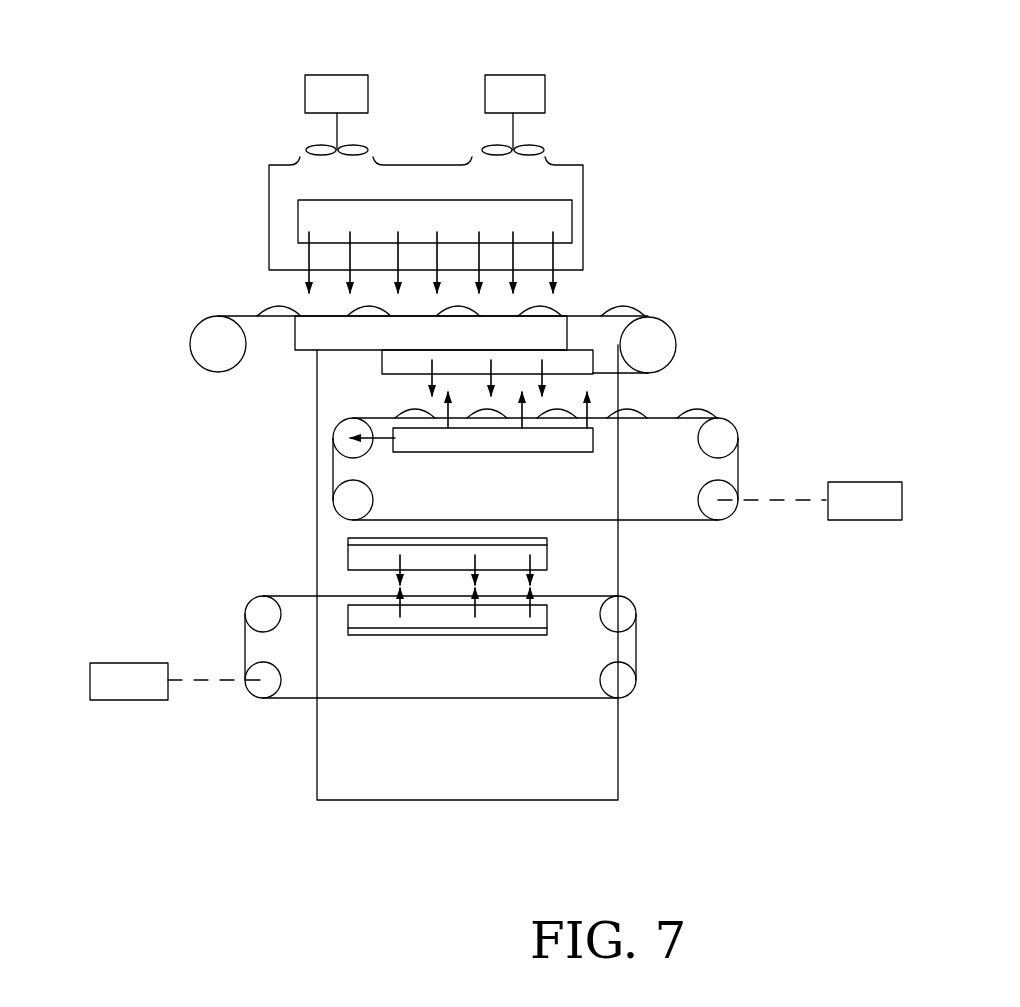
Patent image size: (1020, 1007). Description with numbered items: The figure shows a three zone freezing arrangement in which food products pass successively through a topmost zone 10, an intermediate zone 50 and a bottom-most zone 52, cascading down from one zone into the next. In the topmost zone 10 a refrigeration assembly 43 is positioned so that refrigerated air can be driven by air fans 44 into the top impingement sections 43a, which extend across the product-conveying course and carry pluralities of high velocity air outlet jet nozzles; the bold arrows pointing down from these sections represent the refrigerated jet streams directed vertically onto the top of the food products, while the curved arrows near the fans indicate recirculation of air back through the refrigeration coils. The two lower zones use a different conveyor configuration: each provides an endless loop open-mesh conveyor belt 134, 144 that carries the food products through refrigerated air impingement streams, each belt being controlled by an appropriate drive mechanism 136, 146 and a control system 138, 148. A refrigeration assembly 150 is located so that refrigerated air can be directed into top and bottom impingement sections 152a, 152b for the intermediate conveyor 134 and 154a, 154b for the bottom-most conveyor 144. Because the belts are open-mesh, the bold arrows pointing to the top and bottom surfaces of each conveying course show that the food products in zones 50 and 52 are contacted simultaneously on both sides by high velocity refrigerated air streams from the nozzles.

The first zone 10 is at (145, 343).
The refrigeration assembly 43 is at (461, 196).
The top impingement sections 43a is at (540, 240).
The air fans 44 is at (349, 73).
The intermediate zone 50 is at (357, 400).
The bottom-most zone 52 is at (165, 605).
The open-mesh conveyor belt 134 is at (738, 460).
The drive mechanism 136 is at (770, 500).
The control system 138 is at (872, 512).
The open-mesh conveyor belt 144 is at (638, 650).
The drive mechanism 146 is at (212, 682).
The control system 148 is at (136, 690).
The refrigeration assembly 150 is at (410, 783).
The top impingement section 152a is at (577, 350).
The bottom impingement section 152b is at (477, 450).
The top impingement section 154a is at (547, 558).
The bottom impingement section 154b is at (478, 634).